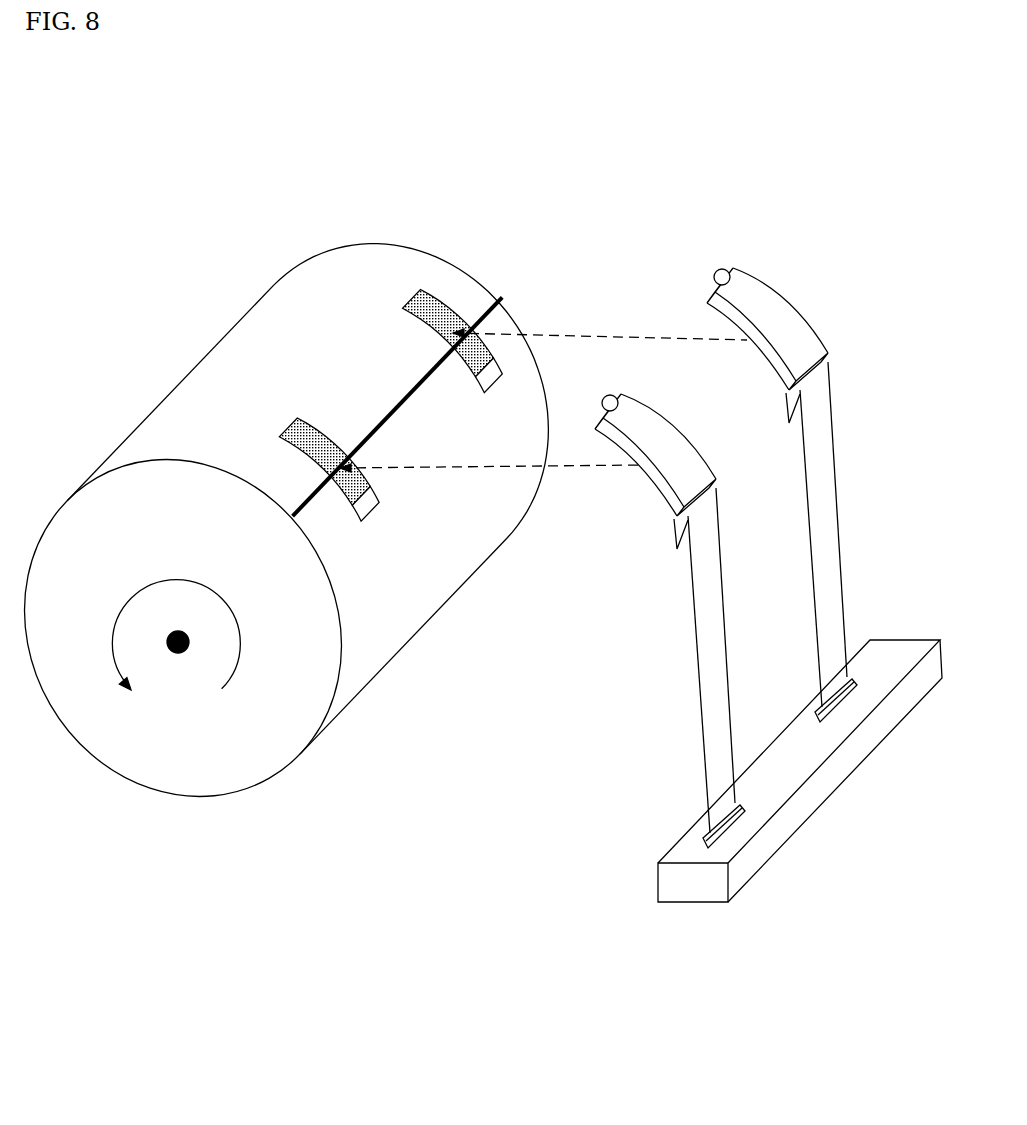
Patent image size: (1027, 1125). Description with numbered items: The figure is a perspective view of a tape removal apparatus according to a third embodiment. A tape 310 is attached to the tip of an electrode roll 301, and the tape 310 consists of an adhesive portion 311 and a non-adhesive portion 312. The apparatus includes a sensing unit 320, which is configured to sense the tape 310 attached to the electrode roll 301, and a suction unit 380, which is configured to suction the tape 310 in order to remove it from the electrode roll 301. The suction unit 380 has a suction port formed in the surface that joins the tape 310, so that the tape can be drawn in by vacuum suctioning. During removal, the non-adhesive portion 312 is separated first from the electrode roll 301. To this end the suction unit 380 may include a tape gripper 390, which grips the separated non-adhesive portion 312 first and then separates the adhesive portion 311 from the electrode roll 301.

The electrode roll 301 is at (233, 367).
The tape 310 is at (424, 350).
The adhesive portion 311 is at (436, 297).
The non-adhesive portion 312 is at (490, 376).
The sensing unit 320 is at (727, 268).
The suction unit 380 is at (790, 317).
The tape gripper 390 is at (794, 410).